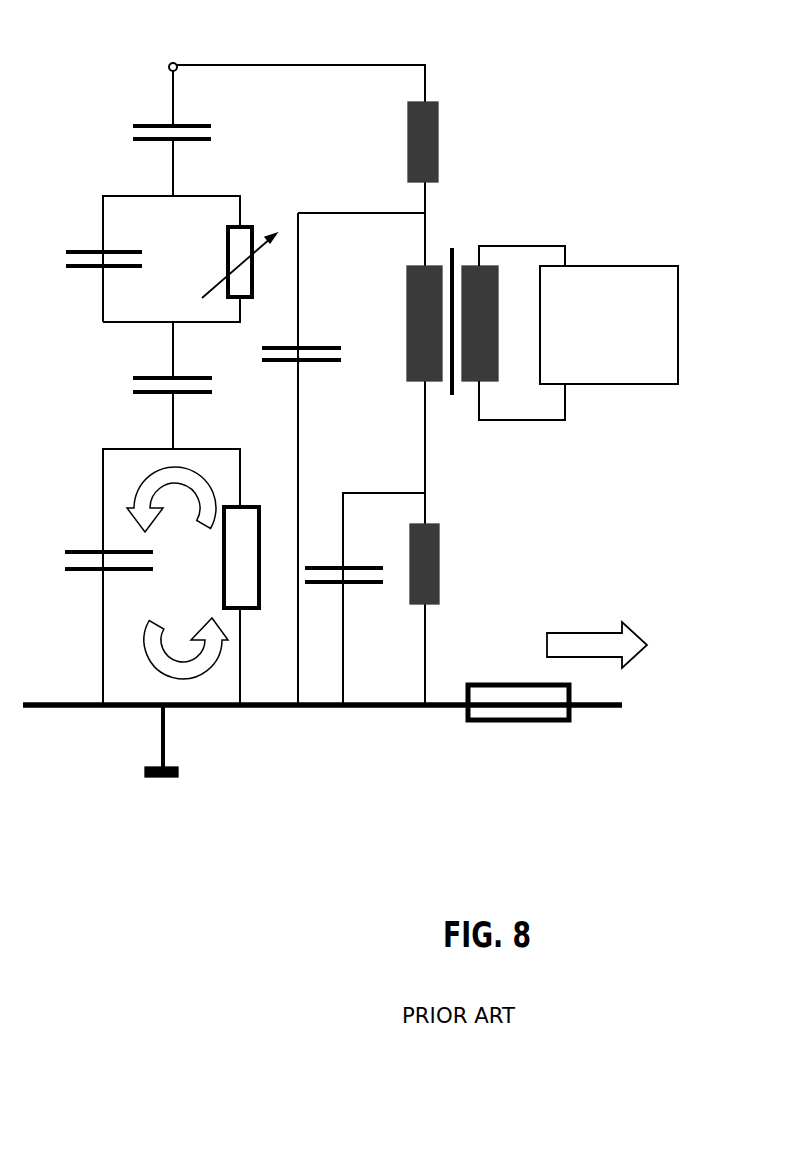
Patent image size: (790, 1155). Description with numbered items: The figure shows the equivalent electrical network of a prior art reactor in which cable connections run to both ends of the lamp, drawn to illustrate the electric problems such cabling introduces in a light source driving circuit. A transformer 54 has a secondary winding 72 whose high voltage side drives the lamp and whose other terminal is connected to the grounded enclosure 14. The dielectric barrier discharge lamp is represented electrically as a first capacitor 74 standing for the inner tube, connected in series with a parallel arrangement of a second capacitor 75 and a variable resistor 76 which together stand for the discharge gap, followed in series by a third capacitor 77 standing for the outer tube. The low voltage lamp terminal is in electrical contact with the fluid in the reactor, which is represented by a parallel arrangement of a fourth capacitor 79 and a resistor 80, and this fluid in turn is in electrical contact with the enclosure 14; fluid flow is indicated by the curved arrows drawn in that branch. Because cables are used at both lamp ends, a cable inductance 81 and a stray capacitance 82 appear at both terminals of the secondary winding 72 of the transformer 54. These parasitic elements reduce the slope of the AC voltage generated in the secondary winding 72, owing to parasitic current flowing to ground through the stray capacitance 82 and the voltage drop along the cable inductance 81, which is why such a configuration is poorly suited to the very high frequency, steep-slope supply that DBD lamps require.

The enclosure 14 is at (267, 705).
The transformer 54 is at (487, 208).
The secondary winding 72 is at (408, 302).
The first capacitor 74 is at (129, 130).
The second capacitor 75 is at (92, 227).
The variable resistor 76 is at (265, 206).
The third capacitor 77 is at (128, 376).
The fourth capacitor 79 is at (90, 530).
The resistor 80 is at (265, 527).
The cable inductance 81 is at (435, 130).
The stray capacitance 82 is at (355, 382).